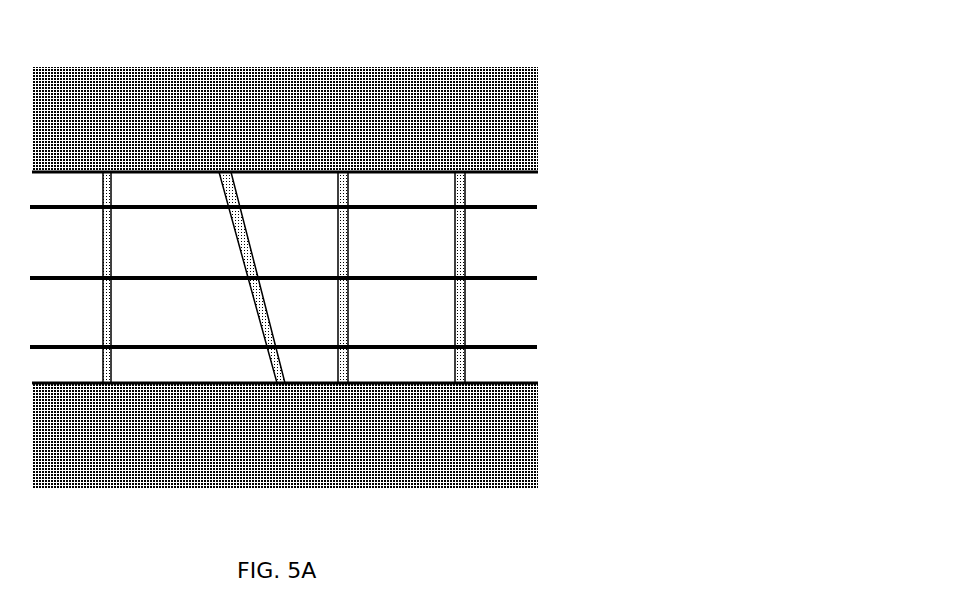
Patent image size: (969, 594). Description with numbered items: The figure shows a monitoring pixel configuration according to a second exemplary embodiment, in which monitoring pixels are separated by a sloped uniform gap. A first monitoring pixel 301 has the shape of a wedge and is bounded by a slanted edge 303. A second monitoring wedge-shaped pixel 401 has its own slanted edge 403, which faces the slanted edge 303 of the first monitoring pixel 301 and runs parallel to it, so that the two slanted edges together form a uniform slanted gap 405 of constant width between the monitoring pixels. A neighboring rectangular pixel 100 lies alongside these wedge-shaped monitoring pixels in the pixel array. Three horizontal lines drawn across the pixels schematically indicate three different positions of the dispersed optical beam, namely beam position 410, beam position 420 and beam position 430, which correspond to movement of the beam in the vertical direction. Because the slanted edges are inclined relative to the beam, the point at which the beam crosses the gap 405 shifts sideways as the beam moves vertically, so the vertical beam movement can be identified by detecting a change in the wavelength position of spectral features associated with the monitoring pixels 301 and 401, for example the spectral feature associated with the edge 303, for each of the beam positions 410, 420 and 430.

The rectangular pixel 100 is at (412, 172).
The first monitoring pixel 301 is at (285, 172).
The second monitoring wedge-shaped pixel 401 is at (165, 172).
The slanted edge 303 is at (250, 258).
The slanted edge 403 is at (240, 257).
The uniform slanted gap 405 is at (278, 383).
The beam position 410 is at (522, 207).
The beam position 420 is at (522, 276).
The beam position 430 is at (522, 346).